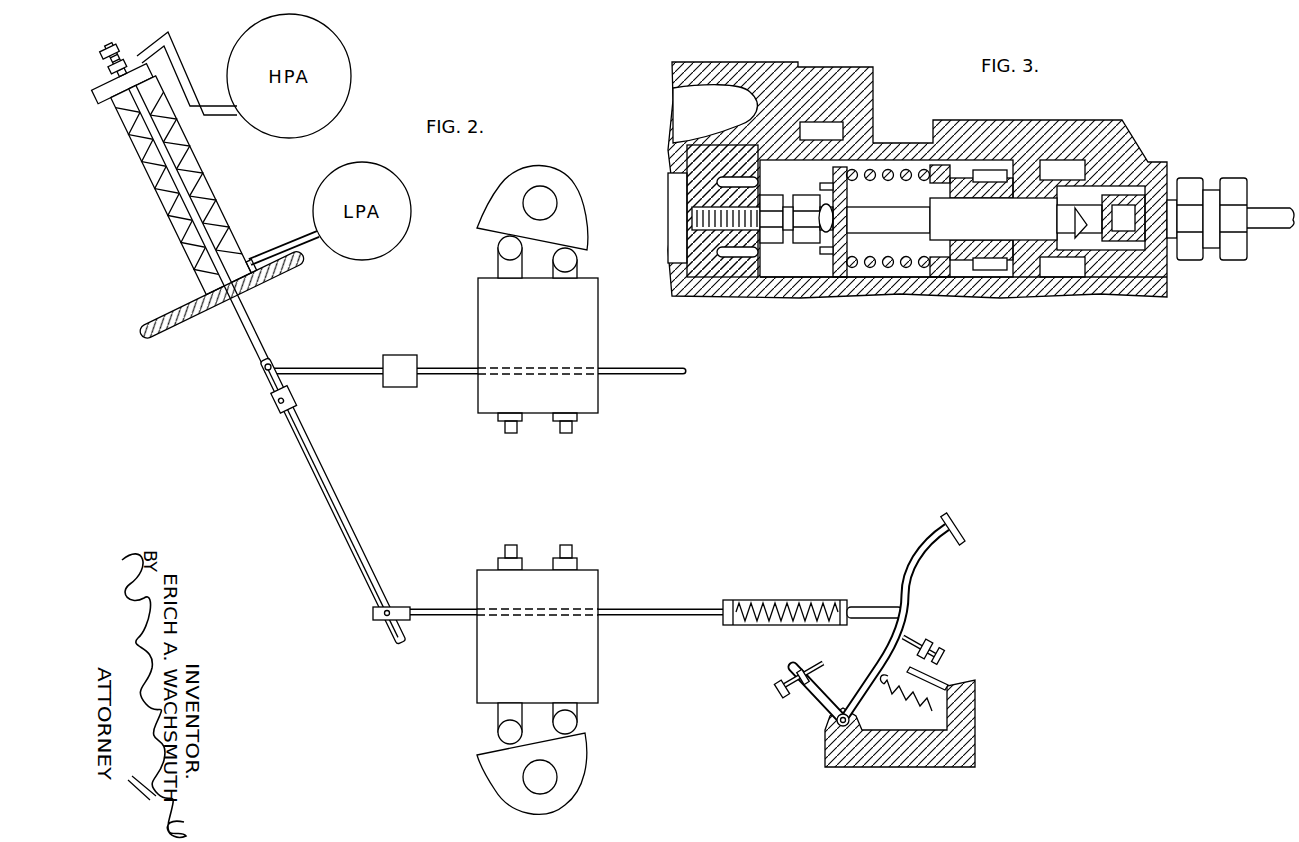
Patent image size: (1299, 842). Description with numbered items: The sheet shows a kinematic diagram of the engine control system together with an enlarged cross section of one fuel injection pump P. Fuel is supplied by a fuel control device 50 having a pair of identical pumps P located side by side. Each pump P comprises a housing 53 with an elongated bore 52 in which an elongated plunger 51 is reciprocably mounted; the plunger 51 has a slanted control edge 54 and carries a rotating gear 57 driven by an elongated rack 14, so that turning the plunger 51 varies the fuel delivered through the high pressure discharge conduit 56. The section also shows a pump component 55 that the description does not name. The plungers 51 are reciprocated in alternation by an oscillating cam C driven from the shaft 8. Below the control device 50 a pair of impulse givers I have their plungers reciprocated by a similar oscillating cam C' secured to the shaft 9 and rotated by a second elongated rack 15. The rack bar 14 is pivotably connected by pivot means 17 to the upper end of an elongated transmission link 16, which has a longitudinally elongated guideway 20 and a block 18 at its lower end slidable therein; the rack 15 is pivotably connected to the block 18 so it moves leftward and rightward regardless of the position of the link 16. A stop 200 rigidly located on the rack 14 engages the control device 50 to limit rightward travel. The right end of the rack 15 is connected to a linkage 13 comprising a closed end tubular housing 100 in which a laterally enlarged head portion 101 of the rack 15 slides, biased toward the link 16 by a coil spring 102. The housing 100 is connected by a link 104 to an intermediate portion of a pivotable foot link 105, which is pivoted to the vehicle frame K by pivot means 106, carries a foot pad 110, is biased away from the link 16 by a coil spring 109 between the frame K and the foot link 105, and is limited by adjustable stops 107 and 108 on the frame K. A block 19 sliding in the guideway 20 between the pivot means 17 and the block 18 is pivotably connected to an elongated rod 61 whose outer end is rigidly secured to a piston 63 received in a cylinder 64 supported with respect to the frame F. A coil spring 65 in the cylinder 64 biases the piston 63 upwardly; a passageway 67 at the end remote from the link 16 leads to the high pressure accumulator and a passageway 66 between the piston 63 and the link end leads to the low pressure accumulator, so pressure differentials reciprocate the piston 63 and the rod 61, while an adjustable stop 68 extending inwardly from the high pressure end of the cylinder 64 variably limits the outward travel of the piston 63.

In FIG. 2, the shaft 8 is at (543, 210).
In FIG. 2, the shaft 9 is at (543, 780).
In FIG. 2, the linkage 13 is at (763, 625).
In FIG. 2, the rack bar 14 is at (342, 367).
In FIG. 2, the rack 15 is at (657, 606).
In FIG. 2, the transmission link 16 is at (347, 512).
In FIG. 2, the pivot means 17 is at (271, 366).
In FIG. 2, the block 18 is at (382, 619).
In FIG. 2, the block 19 is at (272, 402).
In FIG. 2, the guideway 20 is at (310, 458).
In FIG. 2, the fuel control device 50 is at (600, 333).
In FIG. 3, the plunger 51 is at (942, 220).
In FIG. 3, the bore 52 is at (980, 245).
In FIG. 3, the housing 53 is at (1118, 290).
In FIG. 3, the slanted control edge 54 is at (1080, 240).
In FIG. 3, the piston 55 is at (727, 265).
In FIG. 2, the high pressure discharge conduit 56 is at (508, 430).
In FIG. 3, the high pressure discharge conduit 56 is at (1263, 216).
In FIG. 3, the rotating gear 57 is at (987, 170).
In FIG. 2, the rod 61 is at (247, 340).
In FIG. 2, the piston 63 is at (107, 102).
In FIG. 2, the cylinder 64 is at (153, 194).
In FIG. 2, the coil spring 65 is at (180, 238).
In FIG. 2, the passageway 66 is at (266, 256).
In FIG. 2, the passageway 67 is at (190, 79).
In FIG. 2, the adjustable stop 68 is at (104, 54).
In FIG. 2, the tubular housing 100 is at (773, 600).
In FIG. 2, the head portion 101 is at (733, 600).
In FIG. 2, the coil spring 102 is at (805, 606).
In FIG. 2, the link 104 is at (870, 606).
In FIG. 2, the foot link 105 is at (908, 586).
In FIG. 2, the pivot means 106 is at (844, 712).
In FIG. 2, the adjustable stop 107 is at (780, 692).
In FIG. 2, the adjustable stop 108 is at (945, 651).
In FIG. 2, the coil spring 109 is at (926, 702).
In FIG. 2, the foot pad 110 is at (960, 524).
In FIG. 2, the stop 200 is at (395, 356).
In FIG. 2, the frame F is at (158, 322).
In FIG. 3, the frame F is at (683, 73).
In FIG. 2, the fuel injection pump P is at (502, 270).
In FIG. 3, the fuel injection pump P is at (887, 290).
In FIG. 2, the oscillating cam C is at (527, 207).
In FIG. 2, the oscillating cam C' is at (518, 773).
In FIG. 2, the impulse giver I is at (500, 710).
In FIG. 2, the frame K is at (976, 735).